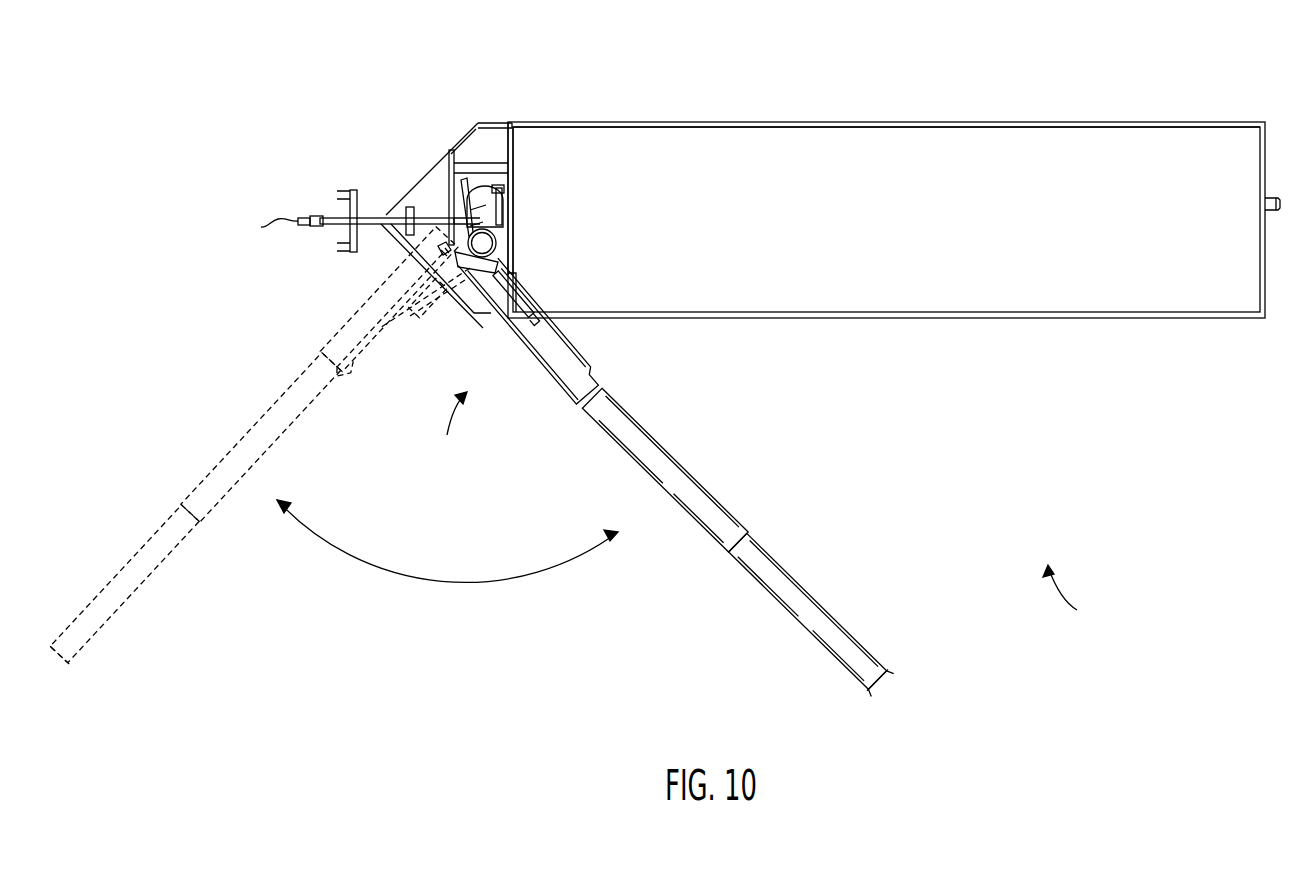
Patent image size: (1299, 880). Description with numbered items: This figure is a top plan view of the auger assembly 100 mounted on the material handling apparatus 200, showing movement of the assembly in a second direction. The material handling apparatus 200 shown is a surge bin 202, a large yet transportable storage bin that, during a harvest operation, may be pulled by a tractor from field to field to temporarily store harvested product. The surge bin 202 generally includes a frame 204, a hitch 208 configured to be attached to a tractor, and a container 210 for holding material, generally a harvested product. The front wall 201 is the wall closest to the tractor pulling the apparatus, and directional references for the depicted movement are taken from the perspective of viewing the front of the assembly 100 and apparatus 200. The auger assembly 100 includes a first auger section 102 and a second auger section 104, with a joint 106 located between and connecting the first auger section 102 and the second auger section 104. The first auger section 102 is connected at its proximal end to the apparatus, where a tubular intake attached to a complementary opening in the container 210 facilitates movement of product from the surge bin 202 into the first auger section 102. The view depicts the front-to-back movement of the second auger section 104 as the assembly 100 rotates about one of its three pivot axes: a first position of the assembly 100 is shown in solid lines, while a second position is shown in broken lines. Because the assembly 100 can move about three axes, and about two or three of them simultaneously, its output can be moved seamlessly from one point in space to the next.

The auger assembly 100 is at (451, 435).
The first auger section 102 is at (490, 200).
The second auger section 104 is at (696, 505).
The joint 106 is at (448, 188).
The material handling apparatus 200 is at (1075, 598).
The front wall 201 is at (512, 150).
The surge bin 202 is at (1163, 320).
The frame 204 is at (508, 124).
The hitch 208 is at (279, 224).
The container 210 is at (920, 258).